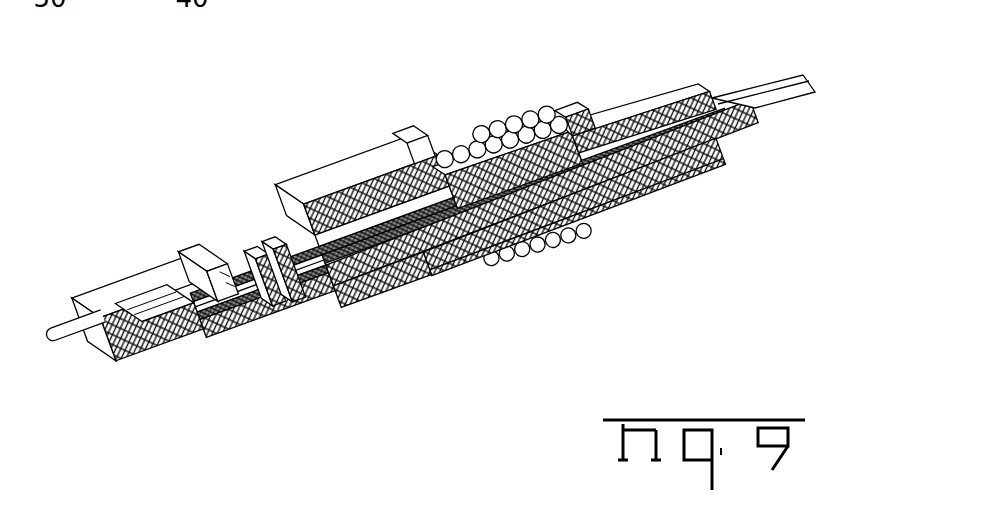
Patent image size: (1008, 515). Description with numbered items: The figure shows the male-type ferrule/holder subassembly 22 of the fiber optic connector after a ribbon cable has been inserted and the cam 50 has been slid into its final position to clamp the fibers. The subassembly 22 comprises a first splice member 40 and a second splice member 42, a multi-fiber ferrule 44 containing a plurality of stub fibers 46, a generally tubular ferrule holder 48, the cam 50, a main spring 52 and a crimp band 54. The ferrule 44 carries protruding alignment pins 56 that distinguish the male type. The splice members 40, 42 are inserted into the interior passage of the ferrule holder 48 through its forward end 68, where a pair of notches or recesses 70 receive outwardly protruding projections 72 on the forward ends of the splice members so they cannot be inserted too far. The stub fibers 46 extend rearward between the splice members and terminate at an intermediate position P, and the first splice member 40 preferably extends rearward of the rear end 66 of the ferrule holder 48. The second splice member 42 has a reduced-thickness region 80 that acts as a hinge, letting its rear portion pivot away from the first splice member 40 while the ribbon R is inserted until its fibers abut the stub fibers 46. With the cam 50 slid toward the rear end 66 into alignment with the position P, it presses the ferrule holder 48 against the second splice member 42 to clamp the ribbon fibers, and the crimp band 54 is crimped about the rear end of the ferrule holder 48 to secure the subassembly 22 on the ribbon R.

The ferrule/holder subassembly 22 is at (417, 126).
The first splice member 40 is at (692, 180).
The second splice member 42 is at (630, 125).
The multi-fiber ferrule 44 is at (130, 292).
The stub fibers 46 is at (193, 326).
The ferrule holder 48 is at (620, 232).
The cam 50 is at (335, 180).
The main spring 52 is at (503, 138).
The crimp band 54 is at (672, 88).
The alignment pins 56 is at (80, 342).
The rear end of the ferrule holder 66 is at (740, 152).
The forward end of the ferrule holder 68 is at (198, 248).
The notches or recesses 70 is at (262, 250).
The outwardly protruding projections 72 is at (283, 262).
The reduced-thickness region 80 is at (570, 146).
The fiber optic ribbon R is at (787, 92).
The intermediate position P is at (392, 275).